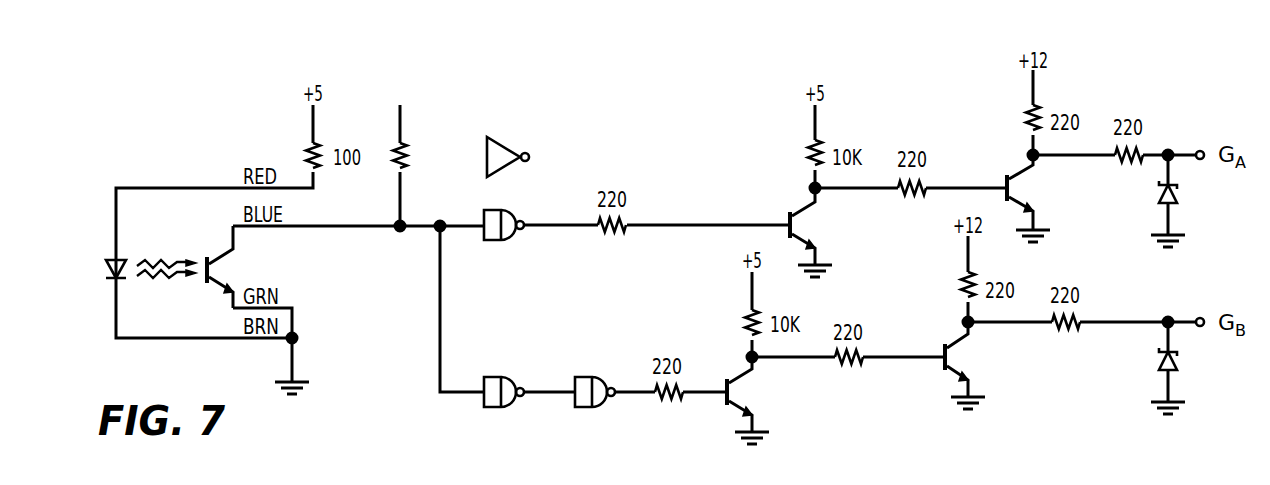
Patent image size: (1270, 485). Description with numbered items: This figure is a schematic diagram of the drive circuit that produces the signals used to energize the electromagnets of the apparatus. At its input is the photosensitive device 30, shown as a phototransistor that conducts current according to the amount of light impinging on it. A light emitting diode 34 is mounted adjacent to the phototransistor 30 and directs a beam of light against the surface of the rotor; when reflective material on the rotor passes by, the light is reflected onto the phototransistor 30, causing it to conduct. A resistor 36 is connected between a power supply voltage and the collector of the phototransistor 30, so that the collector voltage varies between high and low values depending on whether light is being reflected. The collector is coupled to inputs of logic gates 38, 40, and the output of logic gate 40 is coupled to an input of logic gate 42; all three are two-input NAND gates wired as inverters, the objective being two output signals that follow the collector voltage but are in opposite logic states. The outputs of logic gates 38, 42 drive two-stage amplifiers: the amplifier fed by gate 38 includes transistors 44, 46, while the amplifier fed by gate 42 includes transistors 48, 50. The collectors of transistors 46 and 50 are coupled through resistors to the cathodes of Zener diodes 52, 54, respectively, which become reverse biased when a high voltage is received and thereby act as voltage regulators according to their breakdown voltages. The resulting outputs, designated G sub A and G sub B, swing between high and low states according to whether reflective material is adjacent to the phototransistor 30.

The photosensitive device 30 is at (208, 252).
The light emitting diode 34 is at (105, 265).
The resistor 36 is at (393, 152).
The logic gate 38 is at (508, 211).
The logic gate 40 is at (508, 377).
The logic gate 42 is at (598, 377).
The transistor 44 is at (800, 219).
The transistor 46 is at (1016, 182).
The transistor 48 is at (736, 386).
The transistor 50 is at (955, 351).
The Zener diode 52 is at (1180, 197).
The Zener diode 54 is at (1180, 364).